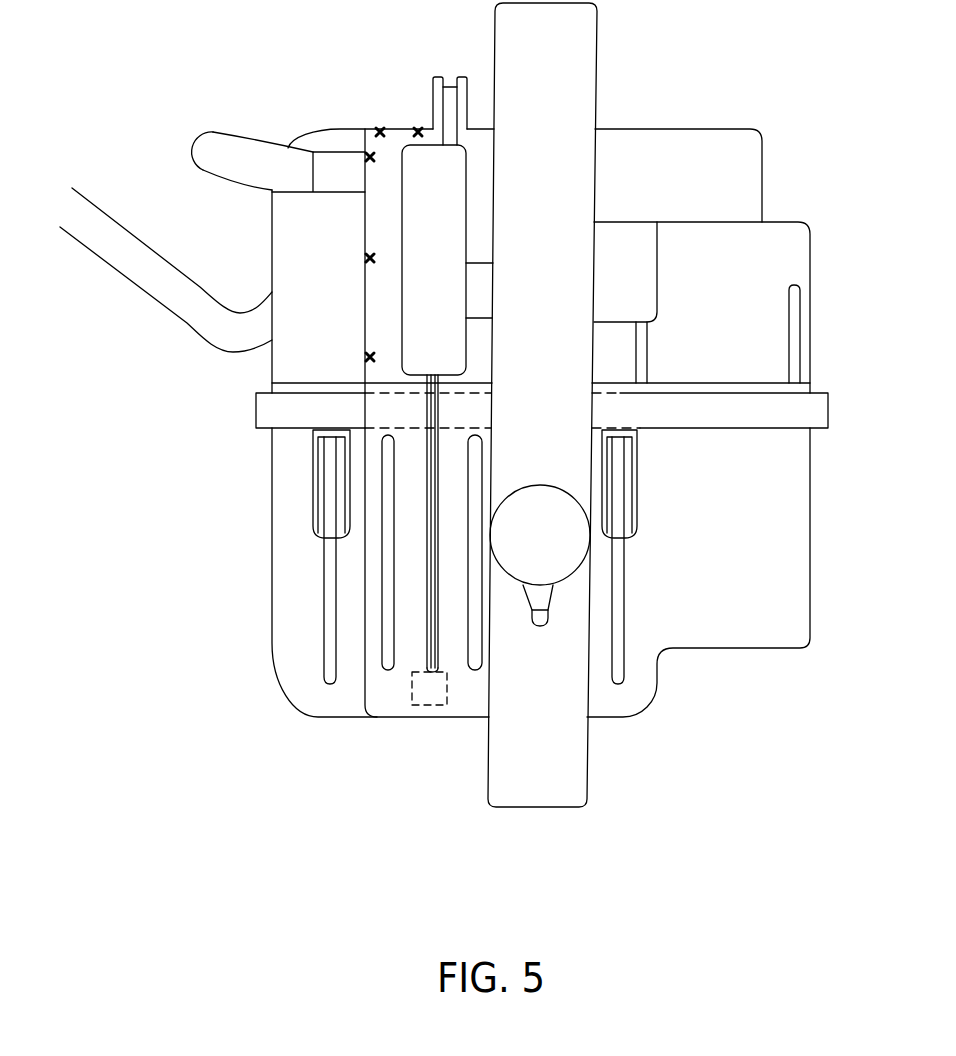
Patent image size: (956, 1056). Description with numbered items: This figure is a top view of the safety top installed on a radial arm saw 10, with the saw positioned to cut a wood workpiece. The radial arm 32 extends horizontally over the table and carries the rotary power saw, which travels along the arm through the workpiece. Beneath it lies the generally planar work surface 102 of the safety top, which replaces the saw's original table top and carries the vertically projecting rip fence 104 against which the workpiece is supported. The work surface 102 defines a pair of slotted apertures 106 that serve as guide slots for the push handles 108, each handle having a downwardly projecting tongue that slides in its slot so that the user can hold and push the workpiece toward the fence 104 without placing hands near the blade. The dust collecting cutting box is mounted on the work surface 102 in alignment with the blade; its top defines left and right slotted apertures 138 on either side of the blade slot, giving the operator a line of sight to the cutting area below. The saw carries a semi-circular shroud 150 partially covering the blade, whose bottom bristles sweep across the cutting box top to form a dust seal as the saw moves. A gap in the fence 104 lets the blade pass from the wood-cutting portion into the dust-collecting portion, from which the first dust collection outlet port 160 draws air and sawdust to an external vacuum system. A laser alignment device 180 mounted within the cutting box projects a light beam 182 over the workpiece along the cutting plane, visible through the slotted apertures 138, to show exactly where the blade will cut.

The radial arm saw 10 is at (607, 88).
The radial arm 32 is at (560, 350).
The work surface 102 is at (760, 522).
The rip fence 104 is at (286, 386).
The slotted apertures 106 is at (310, 682).
The push handles 108 is at (318, 490).
The left and right slotted apertures 138 is at (388, 673).
The semi-circular shroud 150 is at (455, 288).
The first dust collection outlet port 160 is at (343, 160).
The laser alignment device 180 is at (433, 702).
The light beam 182 is at (430, 648).